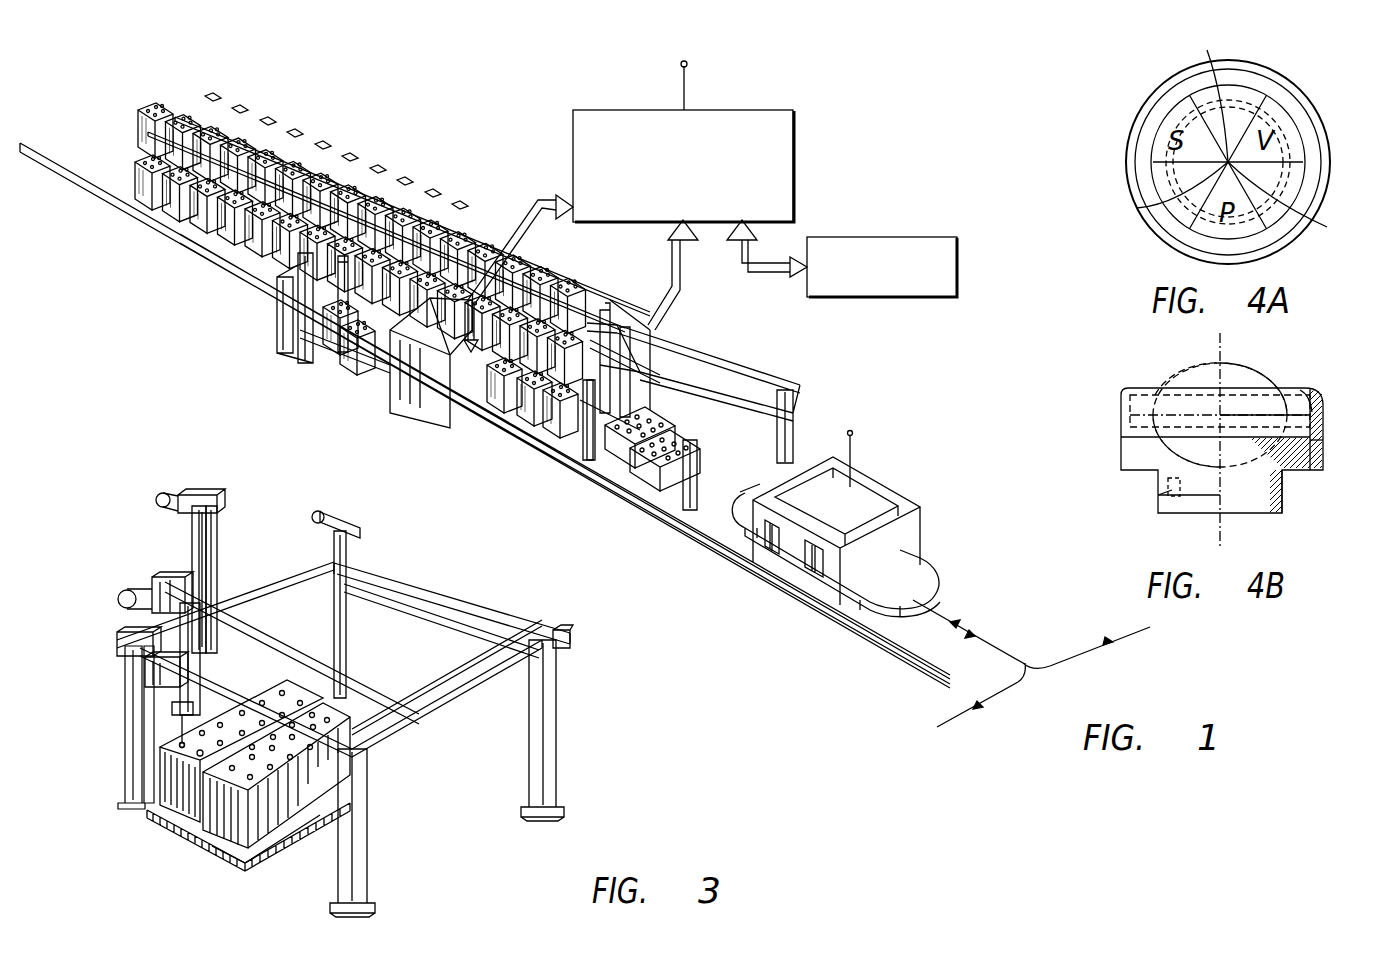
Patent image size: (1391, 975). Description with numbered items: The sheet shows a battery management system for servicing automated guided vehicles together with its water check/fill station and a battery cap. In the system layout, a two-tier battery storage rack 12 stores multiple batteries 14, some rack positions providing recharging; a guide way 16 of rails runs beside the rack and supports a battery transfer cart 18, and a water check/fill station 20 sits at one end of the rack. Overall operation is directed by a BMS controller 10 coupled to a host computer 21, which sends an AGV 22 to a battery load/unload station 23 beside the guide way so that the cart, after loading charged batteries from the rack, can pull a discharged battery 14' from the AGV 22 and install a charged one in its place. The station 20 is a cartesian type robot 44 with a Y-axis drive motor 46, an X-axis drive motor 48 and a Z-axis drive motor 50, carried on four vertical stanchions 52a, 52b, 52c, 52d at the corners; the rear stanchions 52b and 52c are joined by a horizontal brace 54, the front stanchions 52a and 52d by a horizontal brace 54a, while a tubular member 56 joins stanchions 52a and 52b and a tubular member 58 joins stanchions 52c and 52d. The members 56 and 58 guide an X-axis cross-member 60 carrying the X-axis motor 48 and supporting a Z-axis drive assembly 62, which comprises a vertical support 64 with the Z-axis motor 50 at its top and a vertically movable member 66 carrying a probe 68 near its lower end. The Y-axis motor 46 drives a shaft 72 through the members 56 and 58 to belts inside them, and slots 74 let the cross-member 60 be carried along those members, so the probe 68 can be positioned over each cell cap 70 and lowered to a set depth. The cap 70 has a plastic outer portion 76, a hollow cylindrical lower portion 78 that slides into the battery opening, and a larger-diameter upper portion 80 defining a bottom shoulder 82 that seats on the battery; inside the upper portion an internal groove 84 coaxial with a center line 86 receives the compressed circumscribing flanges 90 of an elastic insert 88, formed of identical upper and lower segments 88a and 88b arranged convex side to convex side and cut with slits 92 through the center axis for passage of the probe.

In FIG. 1, the BMS controller 10 is at (795, 163).
In FIG. 1, the two-tier battery storage rack 12 is at (338, 151).
In FIG. 1, the battery 14 is at (217, 252).
In FIG. 3, the battery 14 is at (217, 764).
In FIG. 1, the battery in the AGV 14' is at (770, 567).
In FIG. 1, the guide way 16 is at (613, 489).
In FIG. 1, the battery transfer cart 18 is at (278, 352).
In FIG. 1, the water check/fill station 20 is at (805, 407).
In FIG. 3, the water check/fill station 20 is at (297, 646).
In FIG. 1, the host computer 21 is at (957, 268).
In FIG. 1, the AGV 22 is at (905, 503).
In FIG. 1, the battery load/unload station 23 is at (937, 600).
In FIG. 3, the cartesian type robot 44 is at (169, 567).
In FIG. 3, the Y-axis drive motor 46 is at (320, 512).
In FIG. 3, the X-axis drive motor 48 is at (138, 595).
In FIG. 3, the Z-axis drive motor 50 is at (170, 493).
In FIG. 3, the vertical stanchion 52a is at (367, 855).
In FIG. 3, the vertical stanchion 52b is at (556, 733).
In FIG. 3, the vertical stanchion 52c is at (346, 624).
In FIG. 3, the vertical stanchion 52d is at (128, 687).
In FIG. 3, the horizontal brace 54 is at (465, 630).
In FIG. 3, the horizontal brace 54a is at (117, 646).
In FIG. 3, the tubular member 56 is at (452, 702).
In FIG. 3, the tubular member 58 is at (128, 628).
In FIG. 3, the X-axis cross-member 60 is at (348, 665).
In FIG. 3, the Z-axis drive assembly 62 is at (216, 565).
In FIG. 3, the vertical support 64 is at (197, 549).
In FIG. 3, the vertically movable member 66 is at (201, 676).
In FIG. 3, the probe 68 is at (176, 724).
In FIG. 3, the cell cap 70 is at (196, 753).
In FIG. 4A, the cell cap 70 is at (1228, 146).
In FIG. 4B, the cell cap 70 is at (1228, 440).
In FIG. 3, the shaft 72 is at (475, 594).
In FIG. 4A, the shaft 72 is at (1208, 93).
In FIG. 3, the slot 74 is at (287, 547).
In FIG. 4A, the outer portion of the cap 76 is at (1324, 127).
In FIG. 4B, the outer portion of the cap 76 is at (1323, 462).
In FIG. 4B, the lower portion of the cap 78 is at (1175, 497).
In FIG. 4B, the upper portion of the cap 80 is at (1121, 420).
In FIG. 4B, the bottom shoulder 82 is at (1300, 475).
In FIG. 4B, the internal groove 84 is at (1300, 392).
In FIG. 4A, the center line 86 is at (1137, 208).
In FIG. 4B, the center line 86 is at (1222, 347).
In FIG. 4B, the elastic insert 88 is at (1268, 372).
In FIG. 4B, the upper segment 88a is at (1195, 372).
In FIG. 4B, the lower segment 88b is at (1165, 462).
In FIG. 4B, the circumscribing flange 90 is at (1313, 415).
In FIG. 4A, the slit 92 is at (1289, 201).